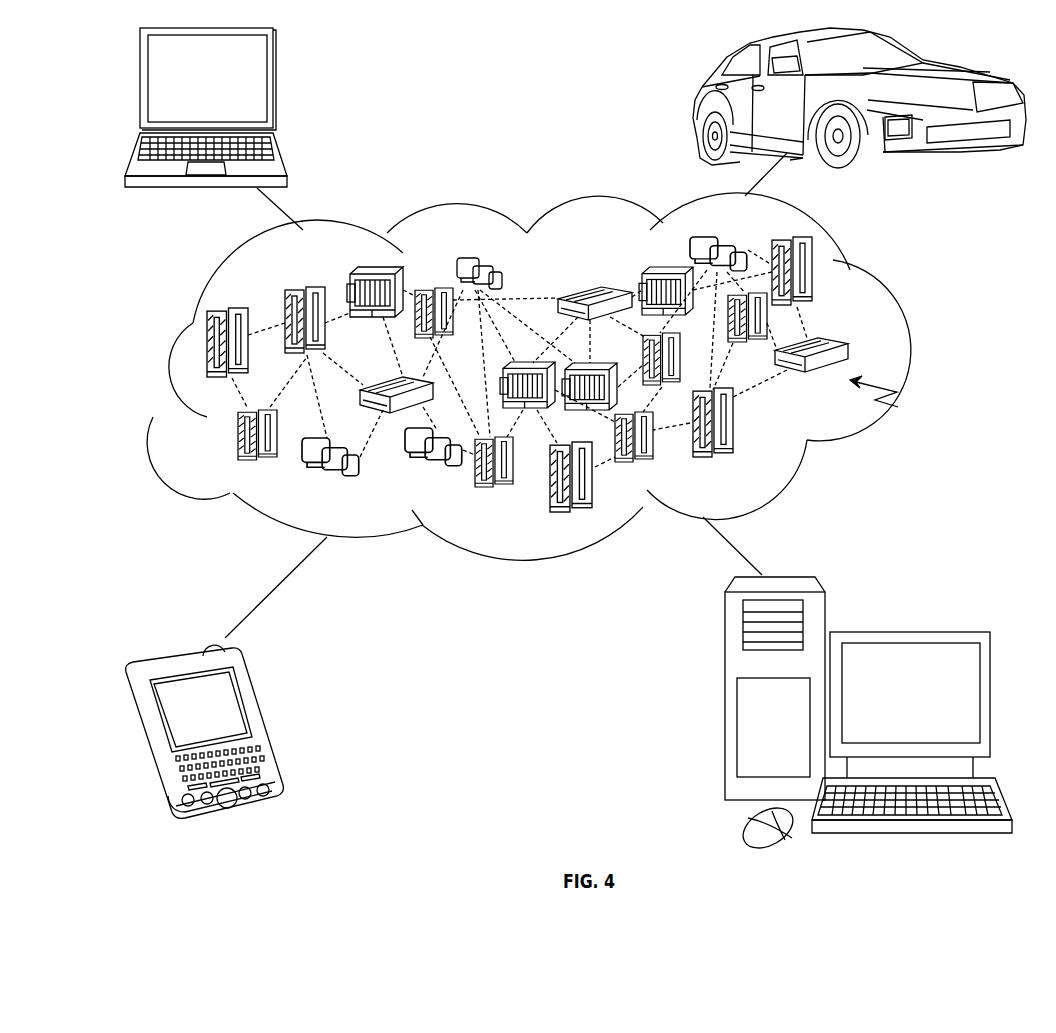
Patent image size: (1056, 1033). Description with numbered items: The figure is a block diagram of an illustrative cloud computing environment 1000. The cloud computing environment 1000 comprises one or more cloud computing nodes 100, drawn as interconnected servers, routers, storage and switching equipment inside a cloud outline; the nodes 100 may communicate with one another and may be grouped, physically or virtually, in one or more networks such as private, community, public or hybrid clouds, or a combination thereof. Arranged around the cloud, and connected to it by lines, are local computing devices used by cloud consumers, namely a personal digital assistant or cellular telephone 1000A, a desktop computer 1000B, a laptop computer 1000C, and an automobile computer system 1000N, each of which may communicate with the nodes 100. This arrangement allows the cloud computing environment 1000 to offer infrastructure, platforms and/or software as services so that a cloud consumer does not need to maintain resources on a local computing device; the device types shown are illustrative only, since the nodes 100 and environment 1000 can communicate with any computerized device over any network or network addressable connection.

The laptop computer 1000C is at (273, 91).
The automobile computer system 1000N is at (697, 102).
The cloud computing environment 1000 is at (908, 352).
The cloud computing nodes 100 is at (898, 407).
The personal digital assistant (PDA) or cellular telephone 1000A is at (262, 723).
The desktop computer 1000B is at (907, 632).